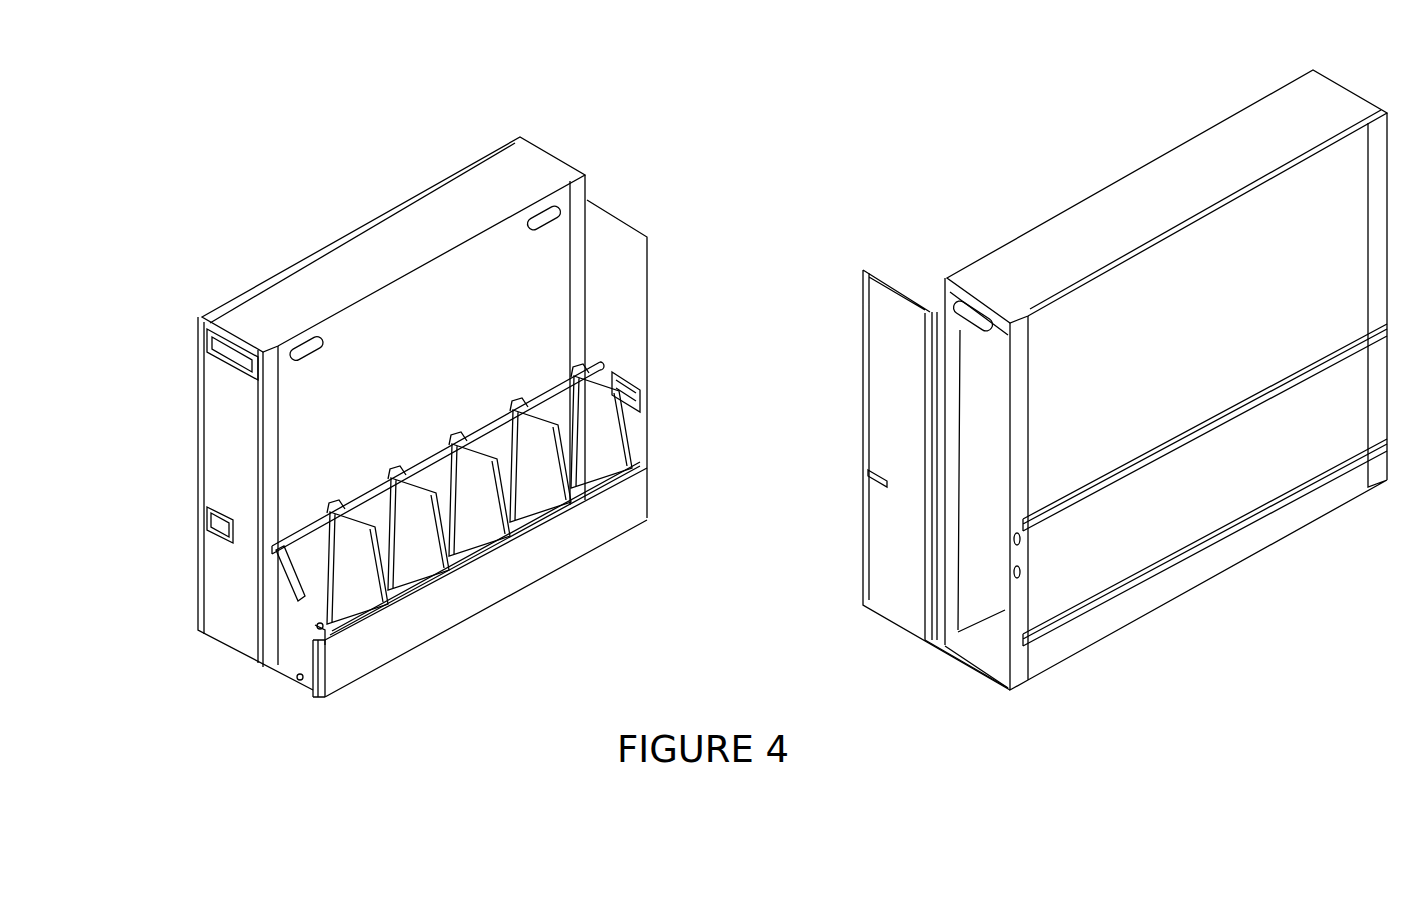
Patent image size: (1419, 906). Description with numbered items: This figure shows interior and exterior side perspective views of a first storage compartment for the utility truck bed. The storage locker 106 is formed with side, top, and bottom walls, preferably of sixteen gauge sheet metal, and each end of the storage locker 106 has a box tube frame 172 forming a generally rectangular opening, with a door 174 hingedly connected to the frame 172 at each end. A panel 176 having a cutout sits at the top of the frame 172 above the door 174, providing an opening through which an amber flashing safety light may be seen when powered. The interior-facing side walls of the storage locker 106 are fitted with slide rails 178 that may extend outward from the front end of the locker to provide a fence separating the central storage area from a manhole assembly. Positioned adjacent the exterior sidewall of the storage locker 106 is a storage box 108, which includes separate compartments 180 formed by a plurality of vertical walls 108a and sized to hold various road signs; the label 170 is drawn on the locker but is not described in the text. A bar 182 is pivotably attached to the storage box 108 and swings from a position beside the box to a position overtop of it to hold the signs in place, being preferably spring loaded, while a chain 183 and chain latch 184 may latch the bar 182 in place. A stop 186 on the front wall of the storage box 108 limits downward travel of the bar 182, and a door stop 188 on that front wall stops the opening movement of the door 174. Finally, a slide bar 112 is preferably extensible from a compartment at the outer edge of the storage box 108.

The storage locker 106 is at (490, 180).
The storage box 108 is at (405, 641).
The vertical walls 108a is at (411, 503).
The slide bar 112 is at (316, 700).
The side wall 170 is at (1195, 300).
The box tube frame 172 is at (955, 428).
The door 174 is at (612, 238).
The panel 176 is at (303, 347).
The slide rails 178 is at (1178, 555).
The compartments 180 is at (625, 460).
The bar 182 is at (555, 393).
The chain 183 is at (497, 461).
The chain latch 184 is at (478, 432).
The stop 186 is at (318, 625).
The door stop 188 is at (298, 678).